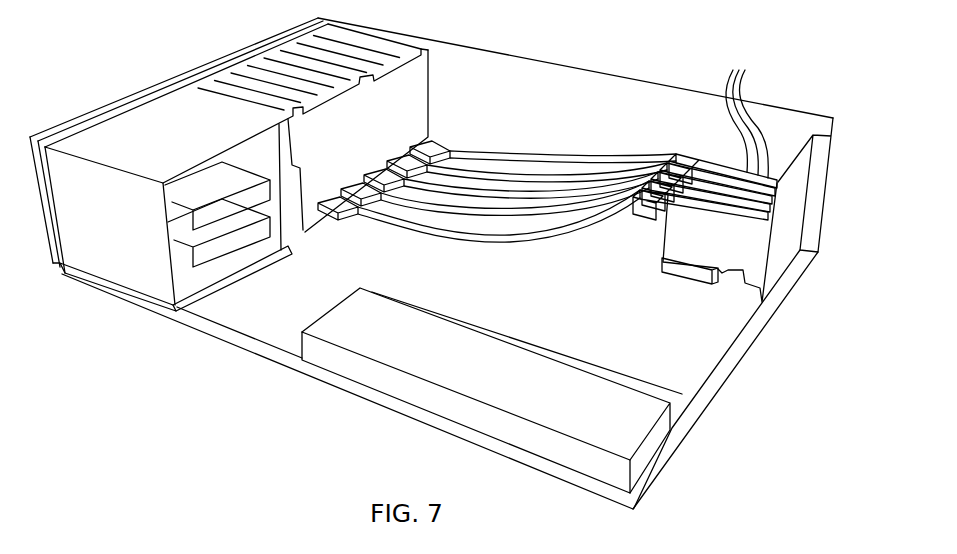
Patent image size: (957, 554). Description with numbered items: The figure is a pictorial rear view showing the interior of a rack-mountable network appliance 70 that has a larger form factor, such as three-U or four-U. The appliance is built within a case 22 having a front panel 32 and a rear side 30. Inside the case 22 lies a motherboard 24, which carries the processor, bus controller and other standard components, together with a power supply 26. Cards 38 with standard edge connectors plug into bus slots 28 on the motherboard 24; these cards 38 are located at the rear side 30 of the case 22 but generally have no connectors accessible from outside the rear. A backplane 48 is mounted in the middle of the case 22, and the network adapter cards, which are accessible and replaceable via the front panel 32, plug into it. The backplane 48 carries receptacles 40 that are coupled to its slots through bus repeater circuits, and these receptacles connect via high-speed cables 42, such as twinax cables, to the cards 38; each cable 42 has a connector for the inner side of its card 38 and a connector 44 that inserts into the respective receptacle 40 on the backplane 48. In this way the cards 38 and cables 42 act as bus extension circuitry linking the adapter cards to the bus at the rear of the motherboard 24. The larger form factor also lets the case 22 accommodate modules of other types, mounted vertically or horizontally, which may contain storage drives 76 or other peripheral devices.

The case 22 is at (553, 62).
The motherboard 24 is at (731, 336).
The power supply 26 is at (663, 442).
The bus slots 28 is at (695, 274).
The rear side 30 is at (797, 284).
The front panel 32 is at (54, 262).
The cards 38 is at (747, 115).
The receptacles 40 is at (684, 158).
The cables 42 is at (521, 184).
The connector 44 is at (432, 145).
The backplane 48 is at (424, 76).
The network appliance 70 is at (828, 45).
The storage drives 76 is at (221, 213).